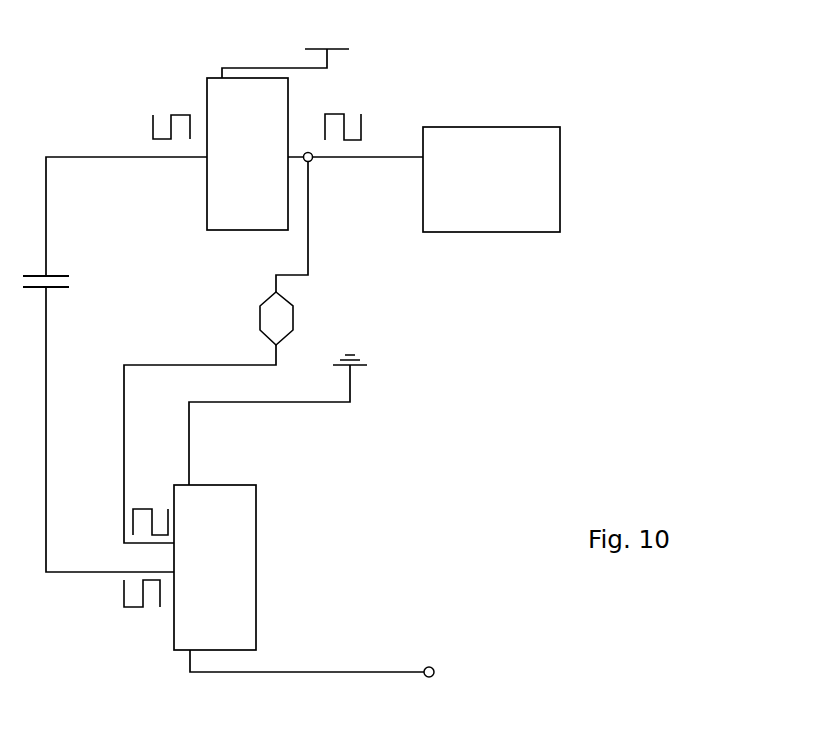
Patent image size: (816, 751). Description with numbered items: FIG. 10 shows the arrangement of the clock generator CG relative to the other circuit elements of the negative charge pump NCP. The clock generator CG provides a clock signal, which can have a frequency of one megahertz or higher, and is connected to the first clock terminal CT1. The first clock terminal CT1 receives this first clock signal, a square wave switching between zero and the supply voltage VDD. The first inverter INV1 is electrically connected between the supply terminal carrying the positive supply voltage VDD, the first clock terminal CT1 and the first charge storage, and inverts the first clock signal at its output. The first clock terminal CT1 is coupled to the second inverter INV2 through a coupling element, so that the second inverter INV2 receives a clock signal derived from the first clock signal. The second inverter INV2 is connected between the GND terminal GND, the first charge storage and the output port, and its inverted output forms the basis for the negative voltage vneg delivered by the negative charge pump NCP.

The first inverter INV1 is at (207, 194).
The second inverter INV2 is at (258, 530).
The first clock terminal CT1 is at (313, 160).
The clock generator CG is at (561, 217).
The negative charge pump NCP is at (673, 105).
The supply voltage VDD is at (288, 48).
The GND terminal GND is at (317, 415).
The negative voltage vneg is at (317, 651).